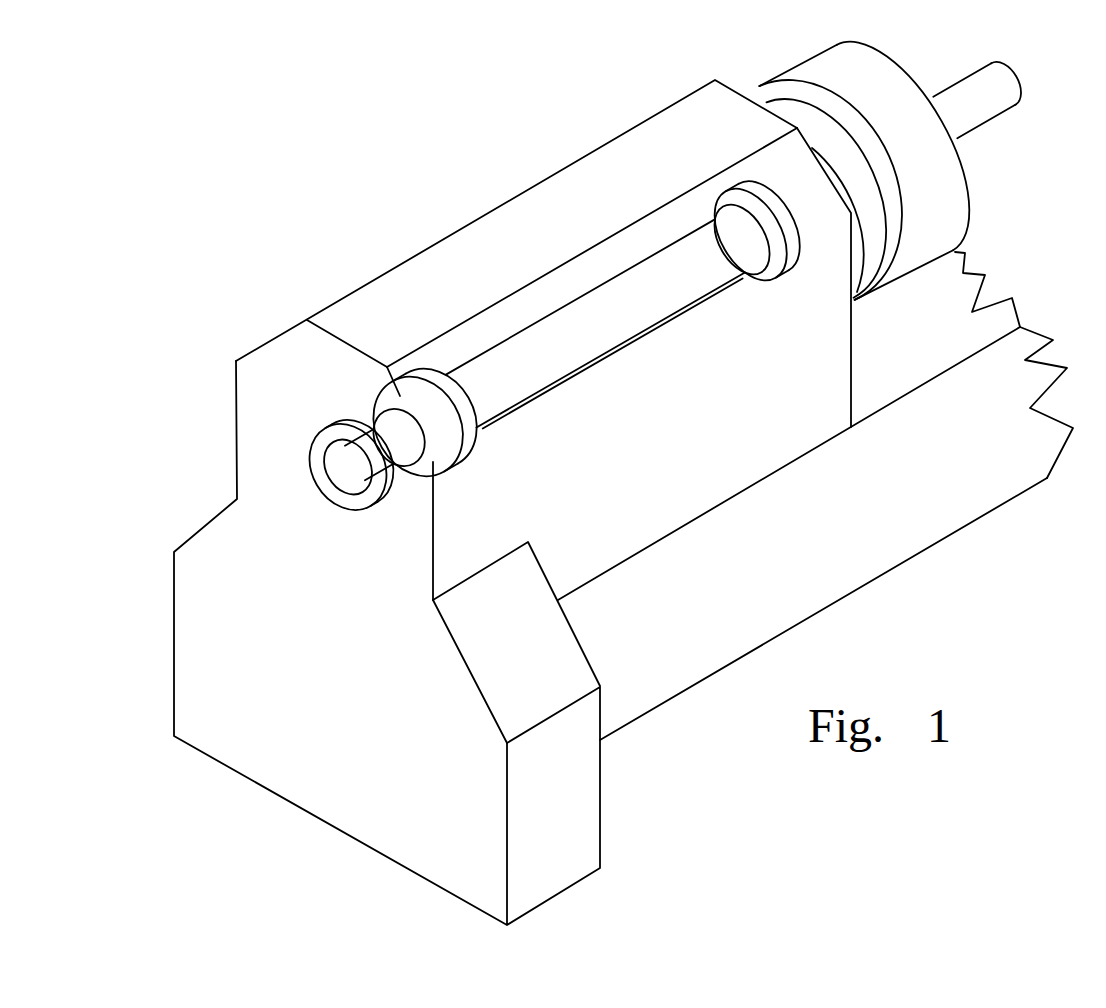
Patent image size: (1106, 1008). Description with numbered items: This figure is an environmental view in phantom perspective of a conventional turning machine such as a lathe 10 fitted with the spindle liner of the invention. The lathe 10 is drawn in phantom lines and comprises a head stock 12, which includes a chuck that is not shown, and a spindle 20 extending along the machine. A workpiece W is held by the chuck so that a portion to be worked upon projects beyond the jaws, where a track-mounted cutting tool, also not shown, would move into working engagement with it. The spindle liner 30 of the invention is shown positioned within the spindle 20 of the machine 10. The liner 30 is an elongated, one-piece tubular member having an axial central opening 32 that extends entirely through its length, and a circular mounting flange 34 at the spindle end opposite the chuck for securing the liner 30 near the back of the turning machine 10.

The lathe 10 is at (972, 564).
The head stock 12 is at (923, 145).
The spindle 20 is at (631, 272).
The spindle liner 30 is at (367, 500).
The axial central opening 32 is at (337, 473).
The mounting flange 34 is at (313, 455).
The workpiece W is at (1013, 80).